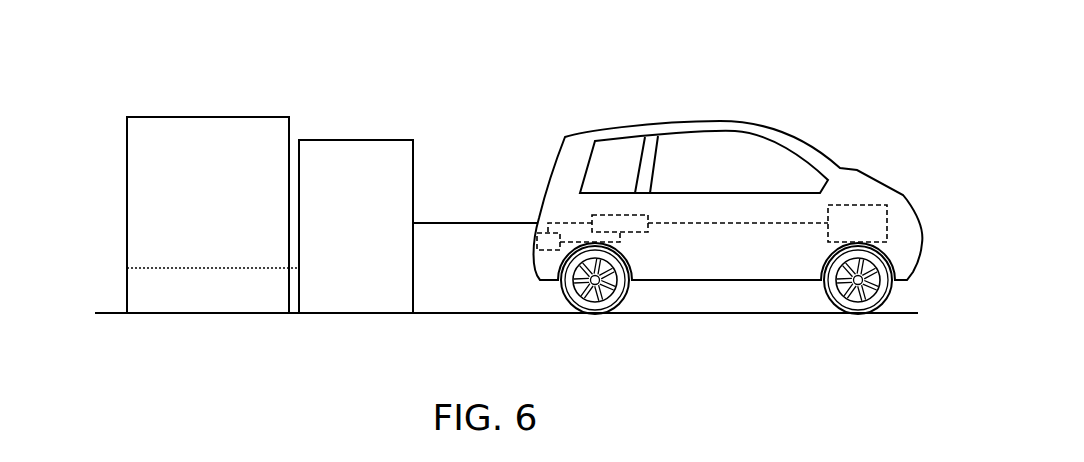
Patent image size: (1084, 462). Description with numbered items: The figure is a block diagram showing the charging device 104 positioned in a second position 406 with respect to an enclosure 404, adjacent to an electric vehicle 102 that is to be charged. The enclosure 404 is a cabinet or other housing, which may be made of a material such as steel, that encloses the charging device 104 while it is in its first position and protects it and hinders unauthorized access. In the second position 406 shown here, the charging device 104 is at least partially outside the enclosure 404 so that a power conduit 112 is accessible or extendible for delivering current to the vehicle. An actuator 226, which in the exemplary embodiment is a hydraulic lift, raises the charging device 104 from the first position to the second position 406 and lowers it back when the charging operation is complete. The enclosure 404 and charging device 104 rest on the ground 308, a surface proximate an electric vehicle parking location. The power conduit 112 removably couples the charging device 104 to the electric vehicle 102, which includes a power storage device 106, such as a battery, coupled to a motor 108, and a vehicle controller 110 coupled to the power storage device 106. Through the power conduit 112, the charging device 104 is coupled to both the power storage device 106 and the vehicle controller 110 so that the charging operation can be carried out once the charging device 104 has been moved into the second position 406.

The electric vehicle 102 is at (742, 84).
The charging device 104 is at (368, 140).
The power storage device 106 is at (636, 232).
The motor 108 is at (863, 205).
The vehicle controller 110 is at (544, 250).
The power conduit 112 is at (453, 223).
The actuator 226 is at (203, 300).
The ground 308 is at (108, 313).
The enclosure 404 is at (235, 117).
The second position 406 is at (341, 96).